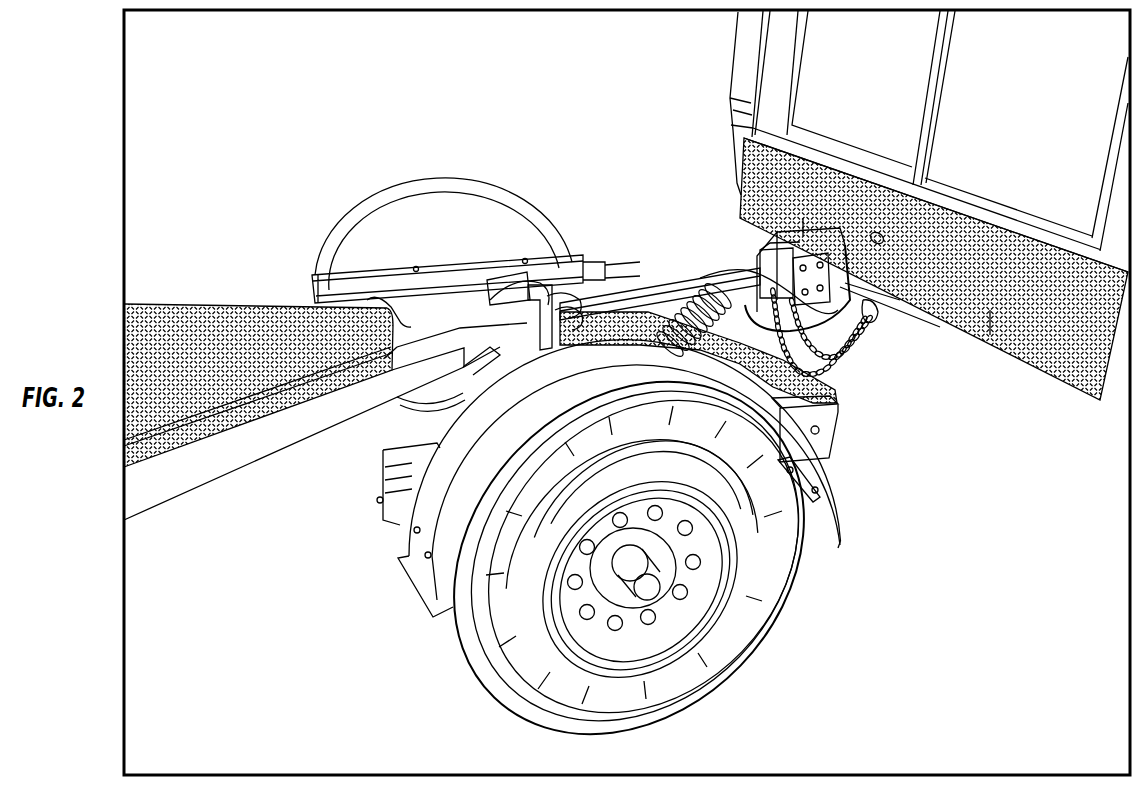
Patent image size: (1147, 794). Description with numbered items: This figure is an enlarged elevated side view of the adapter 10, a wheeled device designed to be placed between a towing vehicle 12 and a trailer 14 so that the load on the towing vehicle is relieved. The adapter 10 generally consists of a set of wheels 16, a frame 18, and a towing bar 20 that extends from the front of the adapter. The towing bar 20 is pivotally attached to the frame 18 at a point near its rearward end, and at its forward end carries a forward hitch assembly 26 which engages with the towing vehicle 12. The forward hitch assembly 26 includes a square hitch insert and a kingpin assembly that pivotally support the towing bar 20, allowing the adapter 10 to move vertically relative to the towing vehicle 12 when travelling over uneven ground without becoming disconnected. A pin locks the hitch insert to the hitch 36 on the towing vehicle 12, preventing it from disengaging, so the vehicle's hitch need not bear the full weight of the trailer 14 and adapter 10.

The adapter 10 is at (374, 138).
The towing vehicle 12 is at (1063, 388).
The trailer 14 is at (234, 480).
The set of wheels 16 is at (747, 653).
The frame 18 is at (838, 427).
The towing bar 20 is at (605, 265).
The forward hitch assembly 26 is at (782, 255).
The hitch 36 is at (873, 332).